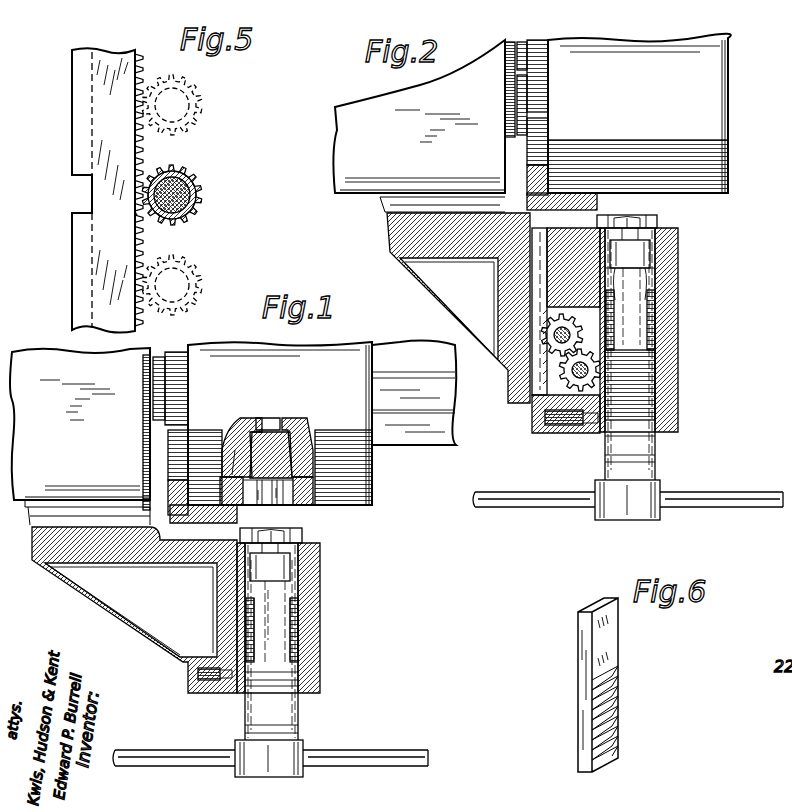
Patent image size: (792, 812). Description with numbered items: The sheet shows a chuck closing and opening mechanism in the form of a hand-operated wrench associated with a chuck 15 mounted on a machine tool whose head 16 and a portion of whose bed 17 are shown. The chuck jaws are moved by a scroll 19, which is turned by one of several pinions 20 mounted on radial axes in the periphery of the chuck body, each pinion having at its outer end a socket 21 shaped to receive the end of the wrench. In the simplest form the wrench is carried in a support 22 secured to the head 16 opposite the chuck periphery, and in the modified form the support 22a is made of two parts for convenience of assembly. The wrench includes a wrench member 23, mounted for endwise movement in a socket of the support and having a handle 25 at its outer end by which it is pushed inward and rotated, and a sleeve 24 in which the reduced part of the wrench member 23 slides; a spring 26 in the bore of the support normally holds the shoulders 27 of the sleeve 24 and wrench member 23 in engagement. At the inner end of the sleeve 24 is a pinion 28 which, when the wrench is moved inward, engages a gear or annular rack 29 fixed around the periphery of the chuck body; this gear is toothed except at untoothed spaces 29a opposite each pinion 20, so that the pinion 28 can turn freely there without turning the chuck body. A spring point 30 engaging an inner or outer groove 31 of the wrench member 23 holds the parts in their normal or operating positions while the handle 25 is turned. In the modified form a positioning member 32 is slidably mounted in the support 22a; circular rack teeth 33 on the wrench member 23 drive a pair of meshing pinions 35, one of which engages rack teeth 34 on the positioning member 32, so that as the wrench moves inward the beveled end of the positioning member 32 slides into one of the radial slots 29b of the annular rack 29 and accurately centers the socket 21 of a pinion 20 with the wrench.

In FIG. 1, the chuck 15 is at (338, 378).
In FIG. 2, the chuck 15 is at (712, 65).
In FIG. 1, the head 16 is at (48, 370).
In FIG. 2, the head 16 is at (352, 107).
In FIG. 1, the bed 17 is at (385, 345).
In FIG. 1, the scroll 19 is at (228, 437).
In FIG. 1, the pinion 20 is at (280, 447).
In FIG. 1, the socket 21 is at (278, 502).
In FIG. 1, the support 22 is at (163, 630).
In FIG. 2, the support 22a is at (712, 407).
In FIG. 5, the wrench member 23 is at (180, 98).
In FIG. 1, the wrench member 23 is at (292, 703).
In FIG. 2, the wrench member 23 is at (650, 472).
In FIG. 5, the sleeve 24 is at (190, 112).
In FIG. 1, the sleeve 24 is at (290, 565).
In FIG. 2, the sleeve 24 is at (650, 258).
In FIG. 1, the handle 25 is at (372, 758).
In FIG. 2, the handle 25 is at (728, 497).
In FIG. 1, the spring 26 is at (292, 616).
In FIG. 2, the spring 26 is at (655, 318).
In FIG. 1, the shoulders 27 is at (296, 588).
In FIG. 2, the shoulders 27 is at (652, 280).
In FIG. 5, the pinion 28 is at (200, 185).
In FIG. 1, the pinion 28 is at (300, 538).
In FIG. 2, the pinion 28 is at (662, 223).
In FIG. 5, the gear or annular rack 29 is at (80, 113).
In FIG. 1, the gear or annular rack 29 is at (168, 492).
In FIG. 2, the gear or annular rack 29 is at (527, 178).
In FIG. 5, the untoothed spaces 29a is at (138, 216).
In FIG. 5, the slots 29b is at (80, 212).
In FIG. 1, the spring point 30 is at (222, 694).
In FIG. 2, the spring point 30 is at (580, 433).
In FIG. 1, the groove 31 is at (298, 677).
In FIG. 2, the groove 31 is at (655, 458).
In FIG. 2, the positioning member 32 is at (537, 277).
In FIG. 6, the positioning member 32 is at (600, 646).
In FIG. 2, the circular rack teeth 33 is at (655, 373).
In FIG. 6, the rack teeth 34 is at (614, 722).
In FIG. 2, the pinions 35 is at (570, 370).